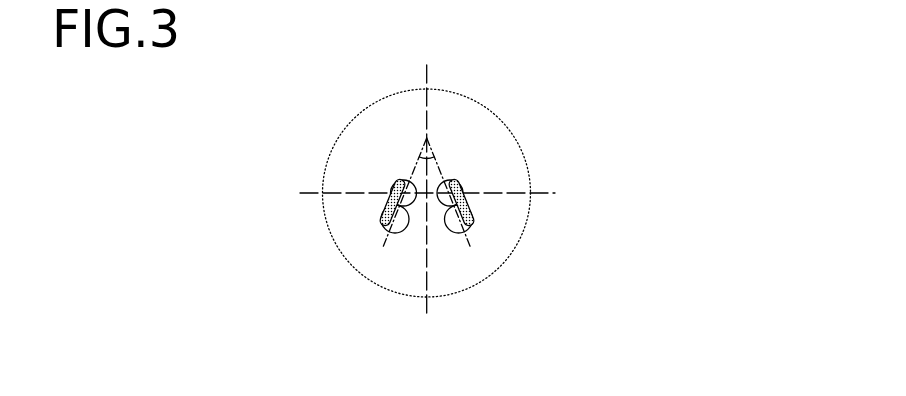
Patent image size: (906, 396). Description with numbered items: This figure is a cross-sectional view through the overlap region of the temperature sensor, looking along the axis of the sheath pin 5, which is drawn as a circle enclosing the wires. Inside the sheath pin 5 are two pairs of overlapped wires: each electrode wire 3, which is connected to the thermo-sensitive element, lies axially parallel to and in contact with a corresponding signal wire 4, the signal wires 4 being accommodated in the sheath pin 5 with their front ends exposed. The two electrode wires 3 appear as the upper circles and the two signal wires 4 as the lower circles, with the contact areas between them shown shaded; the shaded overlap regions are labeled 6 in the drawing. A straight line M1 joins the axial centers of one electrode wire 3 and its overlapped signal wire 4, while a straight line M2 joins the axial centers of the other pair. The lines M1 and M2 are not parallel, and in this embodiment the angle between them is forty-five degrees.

The electrode wire 3 is at (455, 123).
The signal wire 4 is at (489, 291).
The sheath pin 5 is at (427, 165).
The injection hole 6 is at (421, 184).
The straight line M1 is at (304, 268).
The straight line M2 is at (493, 301).